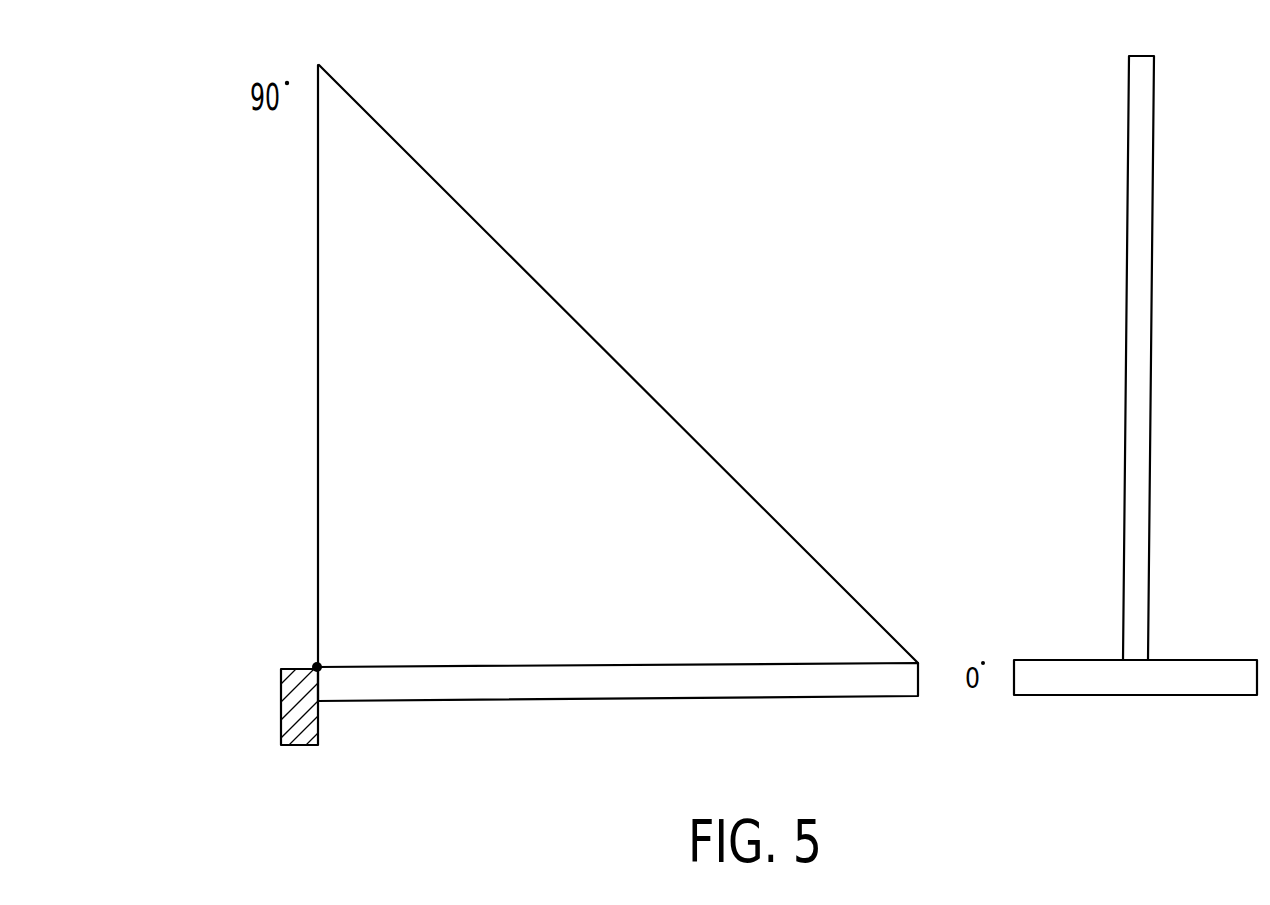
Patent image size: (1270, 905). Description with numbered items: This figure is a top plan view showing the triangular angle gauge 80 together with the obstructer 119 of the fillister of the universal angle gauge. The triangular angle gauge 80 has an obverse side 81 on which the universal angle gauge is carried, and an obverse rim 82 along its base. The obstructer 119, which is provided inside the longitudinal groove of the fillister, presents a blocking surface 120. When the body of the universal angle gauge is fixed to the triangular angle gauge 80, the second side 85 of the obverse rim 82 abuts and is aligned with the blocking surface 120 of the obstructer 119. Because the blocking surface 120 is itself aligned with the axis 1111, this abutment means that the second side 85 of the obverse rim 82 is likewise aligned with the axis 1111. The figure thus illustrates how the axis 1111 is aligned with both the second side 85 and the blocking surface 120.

The triangular angle gauge 80 is at (608, 301).
The obverse side 81 is at (1123, 507).
The obverse rim 82 is at (1103, 695).
The second side 85 is at (318, 700).
The obstructer 119 is at (281, 677).
The blocking surface 120 is at (317, 688).
The axis 1111 is at (314, 660).